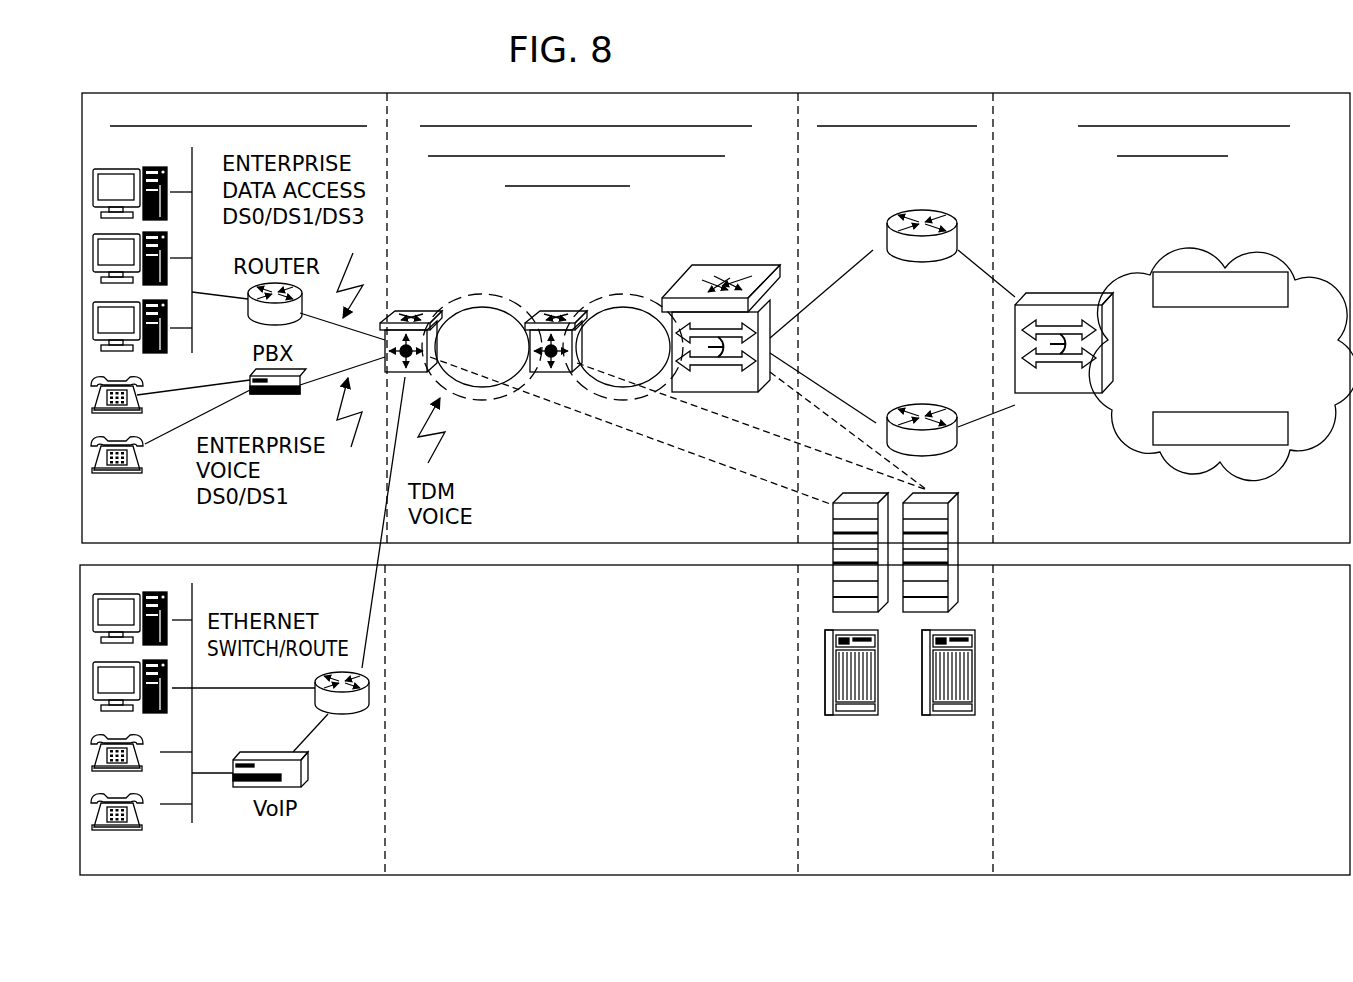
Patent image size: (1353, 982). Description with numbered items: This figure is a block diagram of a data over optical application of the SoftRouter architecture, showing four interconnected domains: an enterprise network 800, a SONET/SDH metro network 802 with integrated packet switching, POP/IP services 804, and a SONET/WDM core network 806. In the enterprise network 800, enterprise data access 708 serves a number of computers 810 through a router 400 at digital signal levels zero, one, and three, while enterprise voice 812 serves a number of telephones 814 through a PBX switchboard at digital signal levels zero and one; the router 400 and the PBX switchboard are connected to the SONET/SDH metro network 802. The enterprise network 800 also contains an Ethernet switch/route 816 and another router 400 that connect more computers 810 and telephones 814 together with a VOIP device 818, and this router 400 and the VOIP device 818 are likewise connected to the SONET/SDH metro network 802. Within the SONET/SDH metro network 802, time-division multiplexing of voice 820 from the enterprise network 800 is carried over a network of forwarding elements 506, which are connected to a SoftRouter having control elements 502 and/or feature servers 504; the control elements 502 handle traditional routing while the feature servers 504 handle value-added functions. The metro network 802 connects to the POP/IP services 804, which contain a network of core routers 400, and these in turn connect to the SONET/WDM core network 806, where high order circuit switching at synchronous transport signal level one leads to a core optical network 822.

The enterprise network 800 is at (167, 90).
The SONET/SDH metro network 802 is at (685, 90).
The POP/IP services 804 is at (893, 90).
The SONET/WDM core network 806 is at (1143, 90).
The enterprise data access connection 708 is at (192, 150).
The computers 810 is at (93, 190).
The telephones 814 is at (92, 378).
The router 400 is at (252, 322).
The enterprise voice 812 is at (238, 395).
The forwarding elements 506 is at (405, 312).
The time-division multiplexing of voice 820 is at (478, 404).
The control elements 502 is at (898, 604).
The feature servers 504 is at (822, 640).
The Ethernet switch/route 816 is at (192, 590).
The VOIP device 818 is at (308, 773).
The core optical network 822 is at (1221, 364).